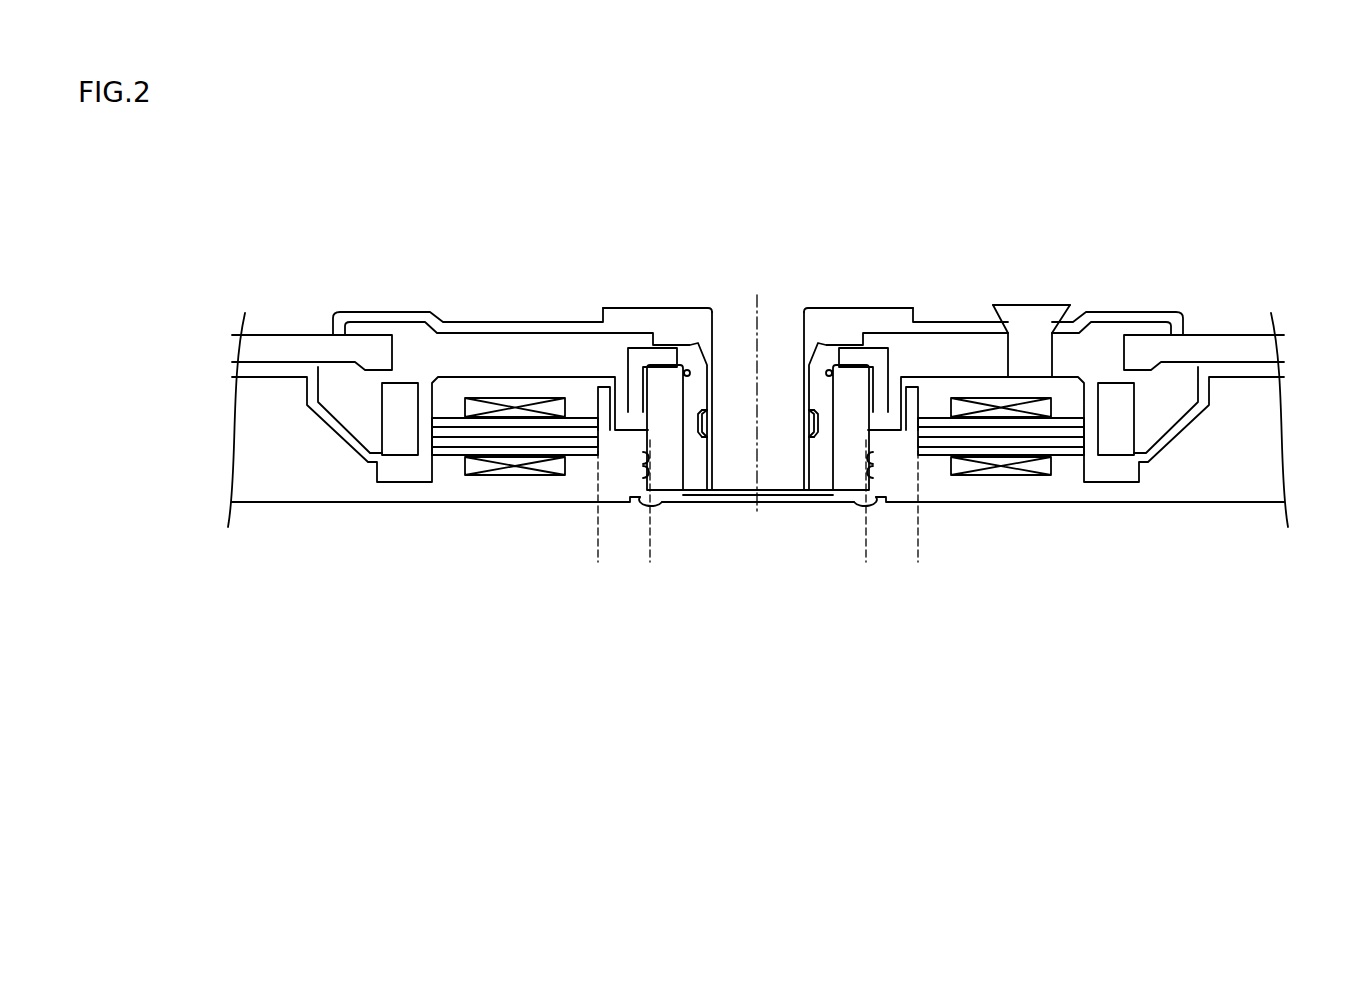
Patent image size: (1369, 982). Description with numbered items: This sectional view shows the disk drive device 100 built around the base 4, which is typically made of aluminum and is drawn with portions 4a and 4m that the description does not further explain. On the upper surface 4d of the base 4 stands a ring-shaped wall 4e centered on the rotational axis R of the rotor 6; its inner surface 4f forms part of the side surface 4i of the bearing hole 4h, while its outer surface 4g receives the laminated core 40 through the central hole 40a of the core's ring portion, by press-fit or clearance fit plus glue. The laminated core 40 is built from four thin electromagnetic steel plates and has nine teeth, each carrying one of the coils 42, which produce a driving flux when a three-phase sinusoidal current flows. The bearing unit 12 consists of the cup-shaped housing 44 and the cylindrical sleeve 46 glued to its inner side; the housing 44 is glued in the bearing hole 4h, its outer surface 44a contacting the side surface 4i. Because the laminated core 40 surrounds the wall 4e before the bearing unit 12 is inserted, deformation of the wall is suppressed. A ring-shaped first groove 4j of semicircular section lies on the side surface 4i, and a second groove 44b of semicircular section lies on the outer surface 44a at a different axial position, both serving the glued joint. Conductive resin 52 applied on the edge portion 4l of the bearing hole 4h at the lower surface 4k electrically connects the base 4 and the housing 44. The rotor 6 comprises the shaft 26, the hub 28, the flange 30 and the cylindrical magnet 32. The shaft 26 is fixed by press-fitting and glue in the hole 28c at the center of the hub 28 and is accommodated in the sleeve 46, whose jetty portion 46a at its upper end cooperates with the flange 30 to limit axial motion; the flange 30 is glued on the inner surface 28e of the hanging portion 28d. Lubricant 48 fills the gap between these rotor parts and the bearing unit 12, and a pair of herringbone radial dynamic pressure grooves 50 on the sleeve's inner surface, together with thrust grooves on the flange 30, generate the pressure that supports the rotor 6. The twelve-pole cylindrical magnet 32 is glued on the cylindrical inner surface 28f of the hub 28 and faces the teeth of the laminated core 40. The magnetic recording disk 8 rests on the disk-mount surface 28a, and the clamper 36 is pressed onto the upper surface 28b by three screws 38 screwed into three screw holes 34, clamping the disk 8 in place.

The disk drive device 100 is at (740, 731).
The base 4 is at (255, 487).
The base plate flat portion 4a is at (268, 440).
The upper surface 4d is at (465, 483).
The ring-shaped wall 4e is at (758, 520).
The inner surface 4f is at (663, 445).
The outer surface 4g is at (590, 440).
The bearing hole 4h is at (677, 503).
The side surface 4i is at (867, 500).
The first groove 4j is at (645, 458).
The lower surface 4k is at (270, 506).
The edge portion 4l is at (653, 503).
The base plate portion 4m is at (652, 505).
The rotor 6 is at (550, 250).
The magnetic recording disk 8 is at (290, 348).
The bearing unit 12 is at (740, 603).
The shaft 26 is at (728, 322).
The hub 28 is at (692, 312).
The disk-mount surface 28a is at (339, 362).
The upper surface 28b is at (412, 334).
The hole 28c is at (803, 340).
The hanging portion 28d is at (612, 445).
The inner surface 28e is at (612, 458).
The cylindrical inner surface 28f is at (403, 437).
The flange 30 is at (640, 345).
The cylindrical magnet 32 is at (405, 400).
The screw holes 34 is at (1013, 355).
The clamper 36 is at (340, 333).
The screws 38 is at (1040, 320).
The laminated core 40 is at (437, 483).
The central hole 40a is at (478, 408).
The coils 42 is at (478, 462).
The housing 44 is at (733, 490).
The outer surface 44a is at (618, 478).
The second groove 44b is at (660, 500).
The sleeve 46 is at (773, 490).
The jetty portion 46a is at (728, 340).
The lubricant 48 is at (640, 400).
The radial dynamic pressure grooves 50 is at (727, 447).
The conductive resin 52 is at (660, 505).
The rotational axis R is at (756, 392).